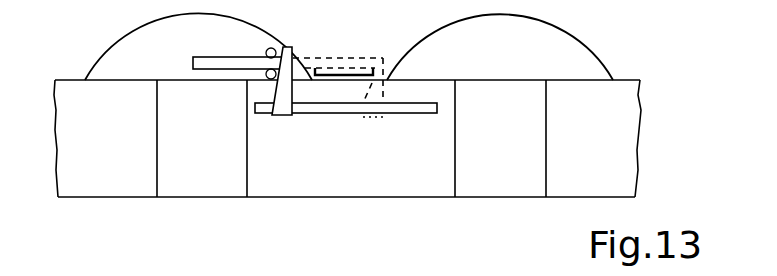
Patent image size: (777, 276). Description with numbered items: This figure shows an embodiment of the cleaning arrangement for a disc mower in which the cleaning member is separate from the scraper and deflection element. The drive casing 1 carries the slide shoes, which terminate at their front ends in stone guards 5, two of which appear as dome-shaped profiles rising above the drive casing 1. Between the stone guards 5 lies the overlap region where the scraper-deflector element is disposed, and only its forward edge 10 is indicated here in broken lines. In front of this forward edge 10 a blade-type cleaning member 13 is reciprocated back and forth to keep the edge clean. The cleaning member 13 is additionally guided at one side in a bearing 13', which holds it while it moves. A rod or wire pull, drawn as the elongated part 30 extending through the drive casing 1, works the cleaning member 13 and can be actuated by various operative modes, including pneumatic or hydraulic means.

The drive casing 1 is at (343, 189).
The stone guard 5 is at (118, 63).
The blade-type cleaning member 13 is at (229, 48).
The bearing 13' is at (296, 66).
The forward edge 10 is at (355, 77).
The rod 30 is at (408, 112).